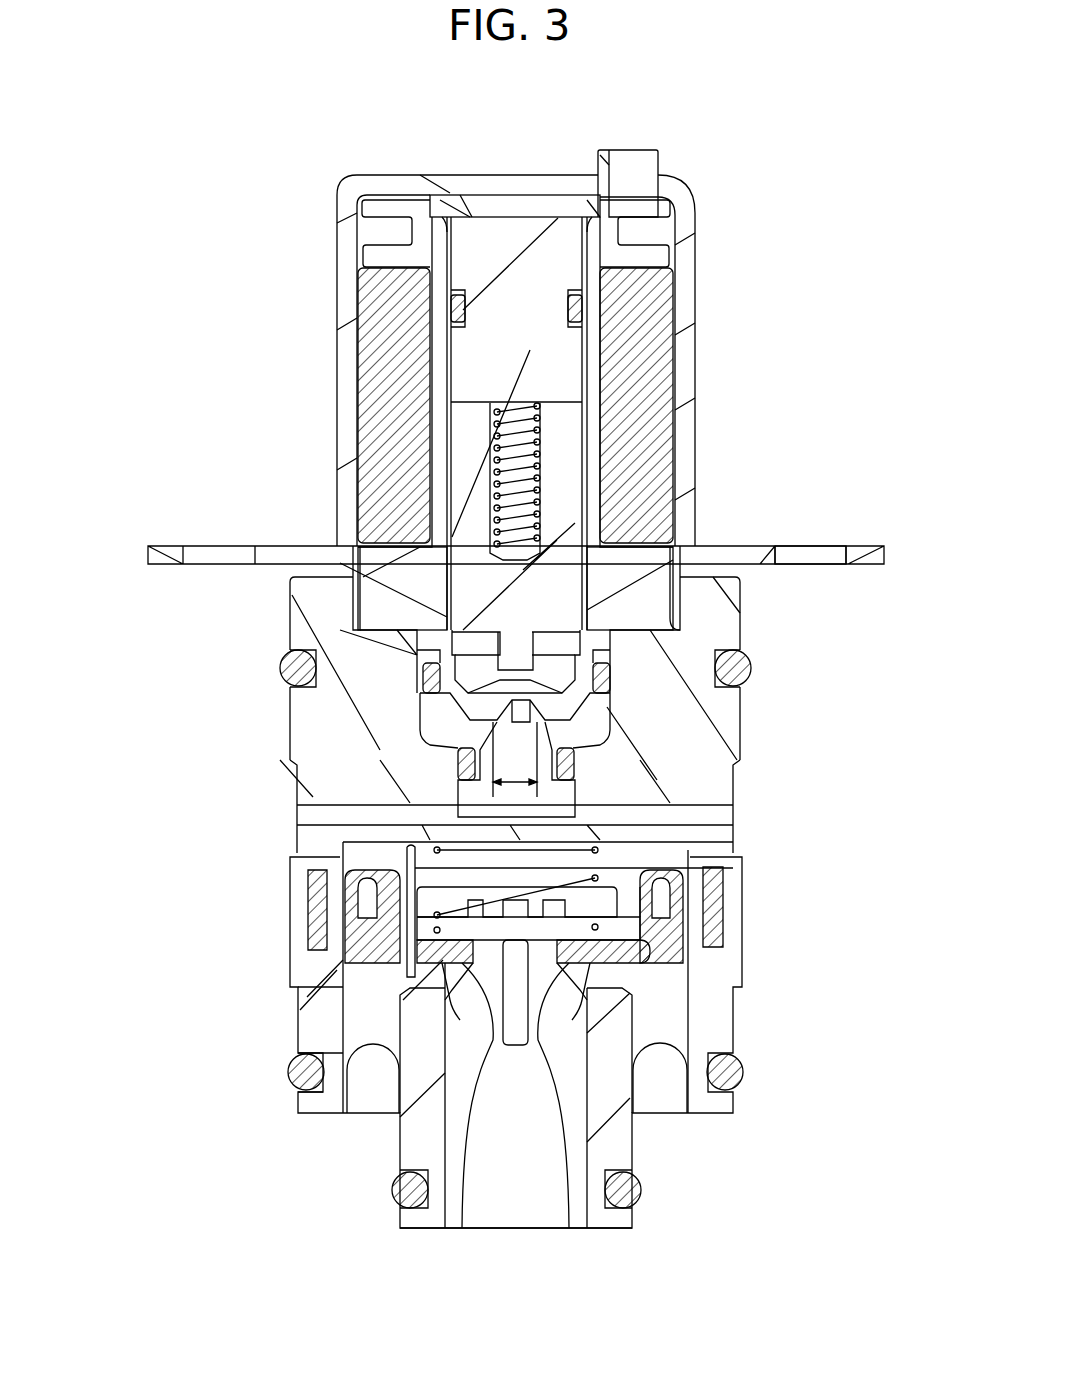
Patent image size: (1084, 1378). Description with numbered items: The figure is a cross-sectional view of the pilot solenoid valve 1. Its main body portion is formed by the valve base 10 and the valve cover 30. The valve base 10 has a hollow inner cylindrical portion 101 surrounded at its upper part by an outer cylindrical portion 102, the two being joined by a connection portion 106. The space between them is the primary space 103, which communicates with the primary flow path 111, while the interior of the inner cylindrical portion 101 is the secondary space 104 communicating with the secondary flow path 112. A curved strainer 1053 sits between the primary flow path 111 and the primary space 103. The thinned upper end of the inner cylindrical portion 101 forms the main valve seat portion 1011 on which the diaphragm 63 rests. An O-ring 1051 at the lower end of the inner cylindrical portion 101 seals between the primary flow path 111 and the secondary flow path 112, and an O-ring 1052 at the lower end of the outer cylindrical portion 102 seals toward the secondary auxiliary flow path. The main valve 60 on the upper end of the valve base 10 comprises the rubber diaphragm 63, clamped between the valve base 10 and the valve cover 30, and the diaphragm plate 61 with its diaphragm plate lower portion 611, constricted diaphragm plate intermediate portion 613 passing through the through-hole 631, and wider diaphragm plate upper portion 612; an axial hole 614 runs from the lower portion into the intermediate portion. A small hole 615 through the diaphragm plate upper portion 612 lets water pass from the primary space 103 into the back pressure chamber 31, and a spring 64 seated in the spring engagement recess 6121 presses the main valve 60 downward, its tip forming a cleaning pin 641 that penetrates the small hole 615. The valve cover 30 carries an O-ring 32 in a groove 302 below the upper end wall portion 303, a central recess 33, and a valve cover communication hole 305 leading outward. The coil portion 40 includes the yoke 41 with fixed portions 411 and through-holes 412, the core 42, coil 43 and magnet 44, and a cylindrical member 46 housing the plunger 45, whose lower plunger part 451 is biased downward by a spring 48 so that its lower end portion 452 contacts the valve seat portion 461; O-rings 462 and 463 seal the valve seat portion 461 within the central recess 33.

The pilot solenoid valve 1 is at (795, 130).
The valve base 10 is at (160, 945).
The inner cylindrical portion 101 is at (425, 1228).
The outer cylindrical portion 102 is at (320, 1113).
The primary space 103 is at (360, 952).
The secondary space 104 is at (627, 988).
The main valve seat portion 1011 is at (630, 927).
The O-ring 1051 is at (640, 1190).
The O-ring 1052 is at (743, 1072).
The strainer 1053 is at (660, 1045).
The connection portion 106 is at (325, 1032).
The primary flow path 111 is at (368, 1097).
The secondary flow path 112 is at (548, 1205).
The valve cover 30 is at (160, 705).
The groove 302 is at (750, 673).
The upper end wall portion 303 is at (740, 590).
The valve cover communication hole 305 is at (733, 815).
The back pressure chamber 31 is at (450, 875).
The O-ring 32 is at (750, 662).
The central recess 33 is at (470, 705).
The coil portion 40 is at (757, 258).
The yoke 41 is at (695, 352).
The fixed portion 411 is at (870, 546).
The through-hole 412 is at (820, 546).
The core 42 is at (560, 282).
The coil 43 is at (650, 405).
The magnet 44 is at (512, 195).
The plunger 45 is at (567, 683).
The plunger lower portion 451 is at (563, 580).
The lower end portion 452 is at (423, 670).
The cylindrical member 46 is at (445, 472).
The valve seat portion 461 is at (500, 690).
The O-ring 462 is at (412, 688).
The O-ring 463 is at (458, 765).
The spring 48 is at (490, 430).
The main valve 60 is at (657, 950).
The diaphragm plate 61 is at (520, 1230).
The diaphragm plate lower portion 611 is at (462, 1230).
The diaphragm plate upper portion 612 is at (595, 923).
The spring engagement recess 6121 is at (440, 913).
The diaphragm plate intermediate portion 613 is at (492, 985).
The hole 614 is at (493, 1037).
The small hole 615 is at (390, 930).
The diaphragm 63 is at (583, 1010).
The through-hole 631 is at (540, 985).
The spring 64 is at (477, 840).
The cleaning pin 641 is at (408, 982).